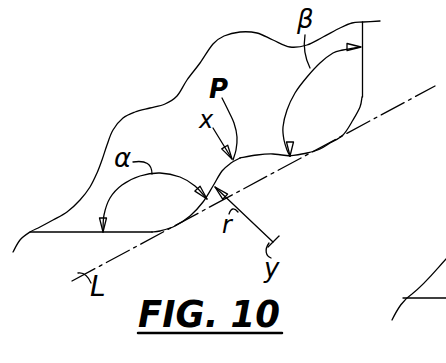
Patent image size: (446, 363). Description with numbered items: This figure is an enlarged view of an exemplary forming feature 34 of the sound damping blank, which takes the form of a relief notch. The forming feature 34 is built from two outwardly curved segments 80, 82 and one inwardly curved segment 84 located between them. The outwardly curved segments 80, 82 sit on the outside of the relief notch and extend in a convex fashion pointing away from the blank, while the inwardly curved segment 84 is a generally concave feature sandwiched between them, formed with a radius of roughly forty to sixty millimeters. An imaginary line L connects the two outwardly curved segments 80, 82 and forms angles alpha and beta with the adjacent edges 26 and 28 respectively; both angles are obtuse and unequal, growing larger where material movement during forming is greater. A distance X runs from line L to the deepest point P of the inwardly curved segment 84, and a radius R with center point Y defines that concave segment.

The adjacent edge 26 is at (68, 234).
The adjacent edge 28 is at (363, 30).
The forming feature 34 is at (272, 184).
The outwardly curved segment 80 is at (173, 226).
The outwardly curved segment 82 is at (321, 149).
The inwardly curved segment 84 is at (263, 157).